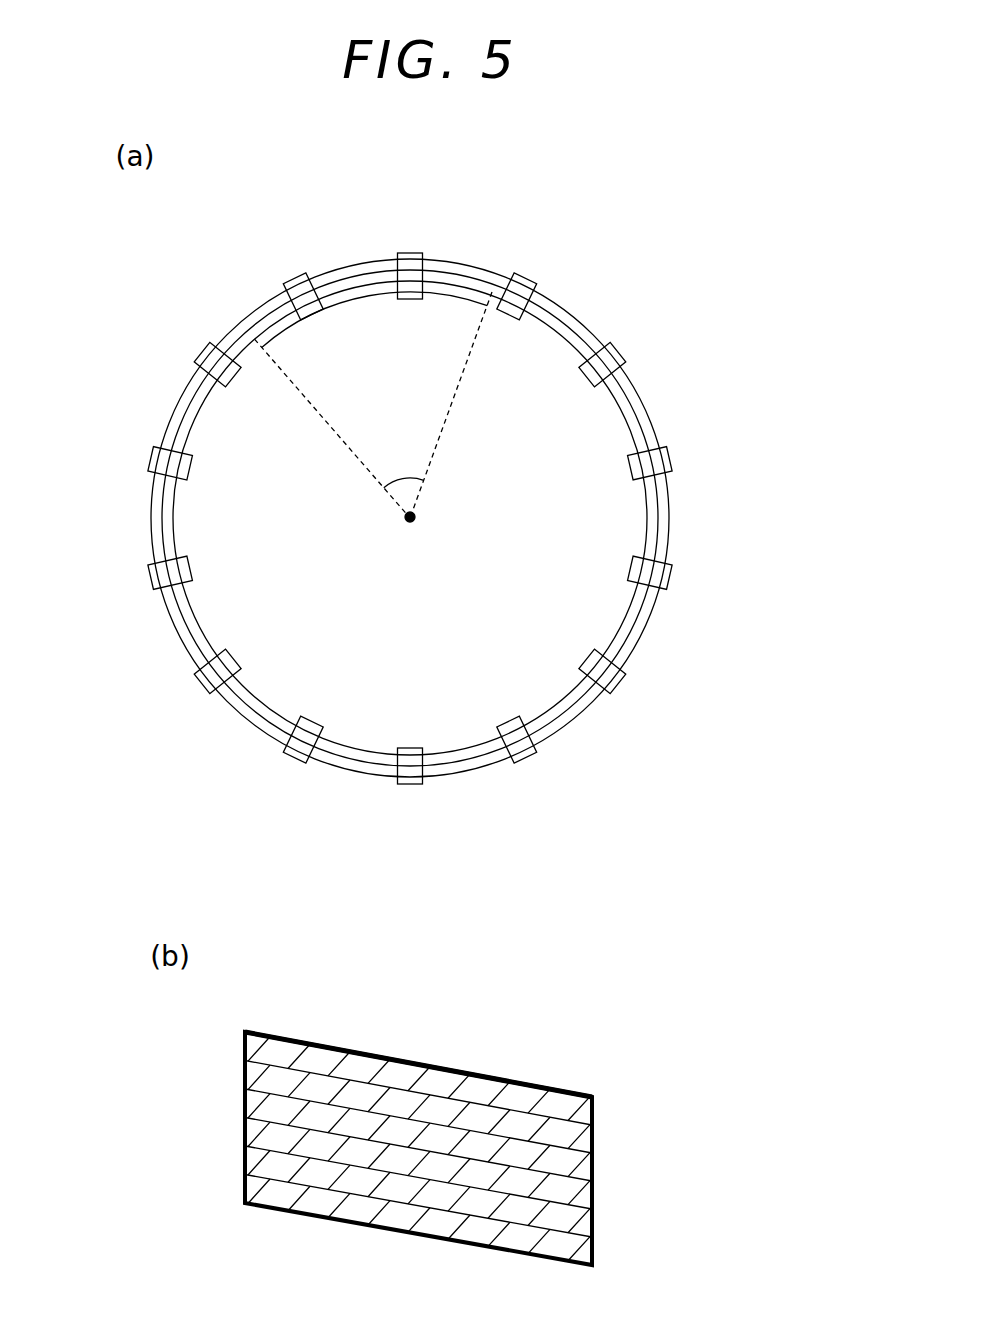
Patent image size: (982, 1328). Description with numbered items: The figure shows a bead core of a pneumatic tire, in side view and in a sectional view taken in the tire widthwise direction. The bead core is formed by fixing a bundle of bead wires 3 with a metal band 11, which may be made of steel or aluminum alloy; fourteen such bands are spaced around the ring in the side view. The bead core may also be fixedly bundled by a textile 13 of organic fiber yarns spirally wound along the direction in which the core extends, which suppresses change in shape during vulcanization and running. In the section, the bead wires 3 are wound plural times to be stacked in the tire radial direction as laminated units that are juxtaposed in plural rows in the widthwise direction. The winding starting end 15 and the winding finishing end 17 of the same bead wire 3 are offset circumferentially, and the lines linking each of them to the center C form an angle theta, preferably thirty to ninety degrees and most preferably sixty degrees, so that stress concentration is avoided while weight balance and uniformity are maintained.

The metal band 11 is at (410, 252).
The winding starting end 15 is at (261, 338).
The winding finishing end 17 is at (498, 272).
The center of the bead core C is at (414, 524).
The angle θ theta is at (404, 469).
The bead wire 3 is at (567, 1107).
The textile 13 is at (533, 1086).